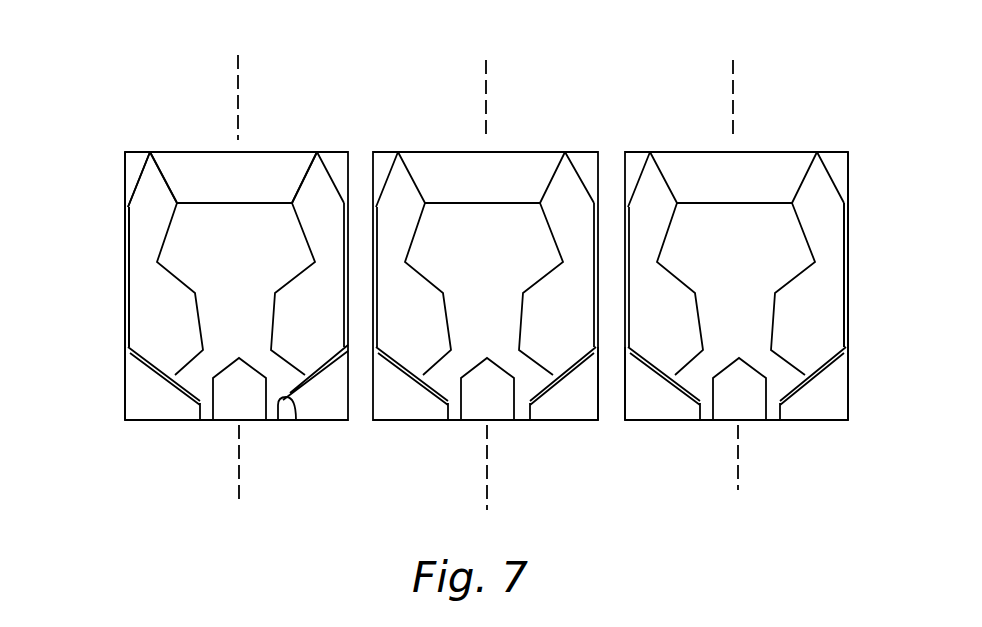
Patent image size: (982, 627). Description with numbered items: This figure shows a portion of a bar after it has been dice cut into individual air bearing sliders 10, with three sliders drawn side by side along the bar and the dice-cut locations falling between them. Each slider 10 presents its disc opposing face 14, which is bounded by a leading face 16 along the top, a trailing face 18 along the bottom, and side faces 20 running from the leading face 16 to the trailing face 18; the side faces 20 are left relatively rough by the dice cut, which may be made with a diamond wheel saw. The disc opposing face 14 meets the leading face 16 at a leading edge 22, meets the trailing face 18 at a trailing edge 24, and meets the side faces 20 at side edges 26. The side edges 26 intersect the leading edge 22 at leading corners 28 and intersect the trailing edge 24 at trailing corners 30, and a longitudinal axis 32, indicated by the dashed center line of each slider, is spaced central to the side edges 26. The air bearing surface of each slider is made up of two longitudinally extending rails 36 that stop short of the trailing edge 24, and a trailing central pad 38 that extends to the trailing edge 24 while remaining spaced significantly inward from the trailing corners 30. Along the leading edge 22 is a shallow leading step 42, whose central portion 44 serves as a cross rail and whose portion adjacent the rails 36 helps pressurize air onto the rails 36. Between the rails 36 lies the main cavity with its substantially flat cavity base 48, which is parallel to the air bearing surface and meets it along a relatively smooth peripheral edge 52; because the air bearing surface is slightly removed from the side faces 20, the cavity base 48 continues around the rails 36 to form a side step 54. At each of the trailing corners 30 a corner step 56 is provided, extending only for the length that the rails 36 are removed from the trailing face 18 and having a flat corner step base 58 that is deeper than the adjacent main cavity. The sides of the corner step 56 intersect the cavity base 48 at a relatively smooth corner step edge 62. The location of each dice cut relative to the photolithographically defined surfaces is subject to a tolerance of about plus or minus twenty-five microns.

The air bearing slider 10 is at (203, 110).
The disc opposing face 14 is at (256, 217).
The leading face 16 is at (763, 150).
The trailing face 18 is at (773, 423).
The side faces 20 is at (128, 340).
The leading edge 22 is at (503, 152).
The trailing edge 24 is at (527, 420).
The side edges 26 is at (126, 252).
The leading corners 28 is at (344, 152).
The trailing corners 30 is at (601, 398).
The longitudinal axis 32 is at (237, 72).
The rails 36 is at (152, 187).
The trailing central pad 38 is at (228, 405).
The leading step 42 is at (222, 168).
The central portion 44 is at (180, 165).
The cavity base 48 is at (278, 218).
The peripheral edge 52 is at (128, 210).
The side step 54 is at (127, 300).
The corner step 56 is at (160, 405).
The corner step base 58 is at (138, 388).
The corner step edge 62 is at (296, 420).